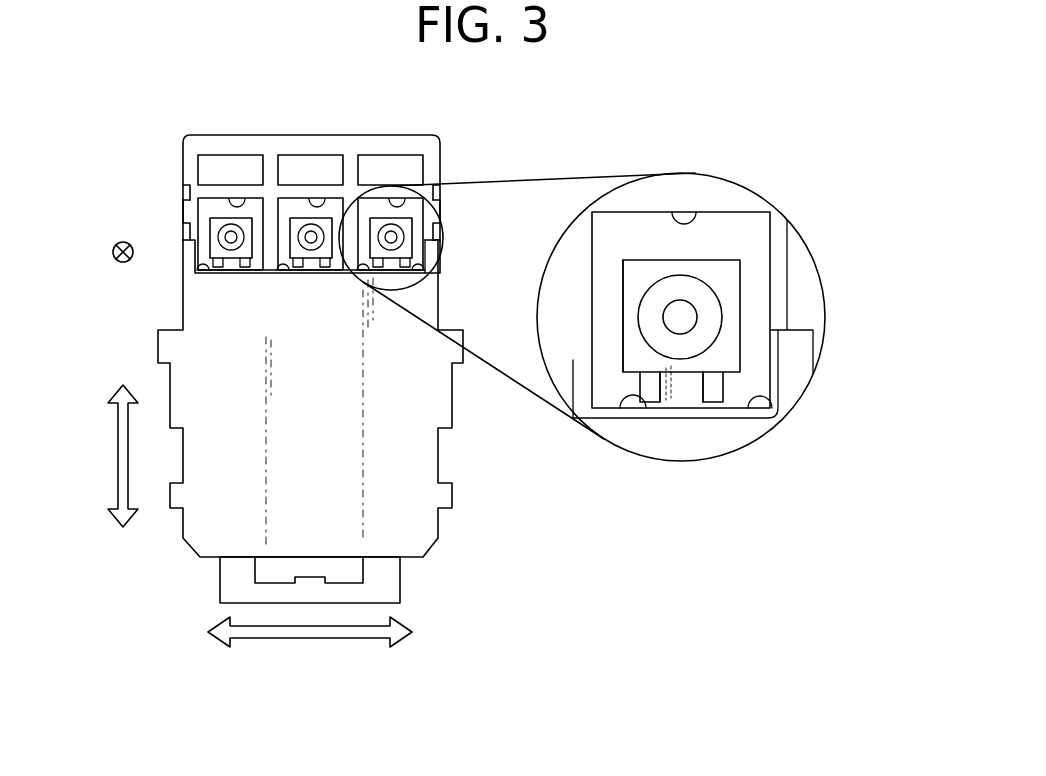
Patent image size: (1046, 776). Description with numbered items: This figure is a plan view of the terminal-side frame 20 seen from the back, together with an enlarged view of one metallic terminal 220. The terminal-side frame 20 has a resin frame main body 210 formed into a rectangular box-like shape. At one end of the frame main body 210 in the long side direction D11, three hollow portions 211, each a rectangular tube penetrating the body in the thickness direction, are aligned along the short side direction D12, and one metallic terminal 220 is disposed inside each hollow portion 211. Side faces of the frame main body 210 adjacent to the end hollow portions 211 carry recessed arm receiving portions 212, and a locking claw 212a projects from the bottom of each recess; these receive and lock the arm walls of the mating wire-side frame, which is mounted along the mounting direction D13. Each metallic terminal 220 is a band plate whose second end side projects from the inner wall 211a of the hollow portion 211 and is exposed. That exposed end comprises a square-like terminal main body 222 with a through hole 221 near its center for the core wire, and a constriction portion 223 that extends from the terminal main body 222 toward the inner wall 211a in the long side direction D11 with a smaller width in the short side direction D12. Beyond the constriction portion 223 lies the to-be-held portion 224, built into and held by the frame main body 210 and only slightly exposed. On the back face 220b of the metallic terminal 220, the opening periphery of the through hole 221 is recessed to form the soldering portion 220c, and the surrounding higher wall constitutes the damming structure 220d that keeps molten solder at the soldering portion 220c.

The terminal-side frame 20 is at (177, 135).
The frame main body 210 is at (440, 459).
The hollow portion 211 is at (243, 198).
The inner wall 211a is at (197, 262).
The arm receiving portion 212 is at (190, 193).
The locking claw 212a is at (183, 216).
The metallic terminal 220 is at (216, 216).
The back face 220b is at (648, 280).
The soldering portion 220c is at (680, 362).
The damming structure 220d is at (680, 362).
The through hole 221 is at (698, 310).
The terminal main body 222 is at (740, 270).
The constriction portion 223 is at (704, 388).
The to-be-held portion 224 is at (622, 398).
The long side direction D11 is at (118, 457).
The short side direction D12 is at (310, 638).
The mounting direction D13 is at (115, 244).